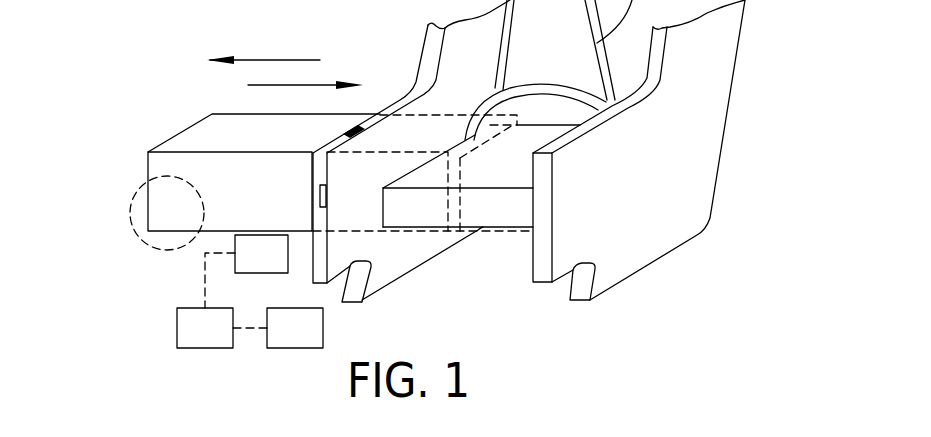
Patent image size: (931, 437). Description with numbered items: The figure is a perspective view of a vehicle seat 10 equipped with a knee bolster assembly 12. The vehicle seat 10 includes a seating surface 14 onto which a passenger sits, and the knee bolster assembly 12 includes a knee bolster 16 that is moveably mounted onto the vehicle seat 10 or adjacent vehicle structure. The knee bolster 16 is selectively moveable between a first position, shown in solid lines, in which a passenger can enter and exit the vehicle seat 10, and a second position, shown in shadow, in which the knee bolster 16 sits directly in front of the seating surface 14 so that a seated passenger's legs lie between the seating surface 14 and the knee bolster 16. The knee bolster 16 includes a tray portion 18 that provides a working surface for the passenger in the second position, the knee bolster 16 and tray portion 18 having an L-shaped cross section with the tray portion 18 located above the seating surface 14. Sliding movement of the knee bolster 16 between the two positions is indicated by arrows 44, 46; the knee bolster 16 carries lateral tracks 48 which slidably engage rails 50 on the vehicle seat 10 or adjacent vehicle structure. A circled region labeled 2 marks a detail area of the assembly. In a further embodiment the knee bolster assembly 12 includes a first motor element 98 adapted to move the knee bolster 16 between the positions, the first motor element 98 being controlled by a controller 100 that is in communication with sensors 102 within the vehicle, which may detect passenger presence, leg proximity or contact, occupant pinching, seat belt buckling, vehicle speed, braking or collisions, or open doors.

The detail region (FIG. 2 view) 2 is at (118, 262).
The vehicle seat 10 is at (670, 176).
The knee bolster assembly 12 is at (295, 156).
The seating surface 14 is at (517, 168).
The knee bolster 16 is at (267, 182).
The tray portion 18 is at (240, 123).
The arrow 44 is at (277, 58).
The arrow 46 is at (325, 82).
The lateral tracks 48 is at (346, 134).
The rails 50 is at (352, 131).
The first motor element 98 is at (277, 267).
The controller 100 is at (223, 341).
The sensors 102 is at (313, 341).